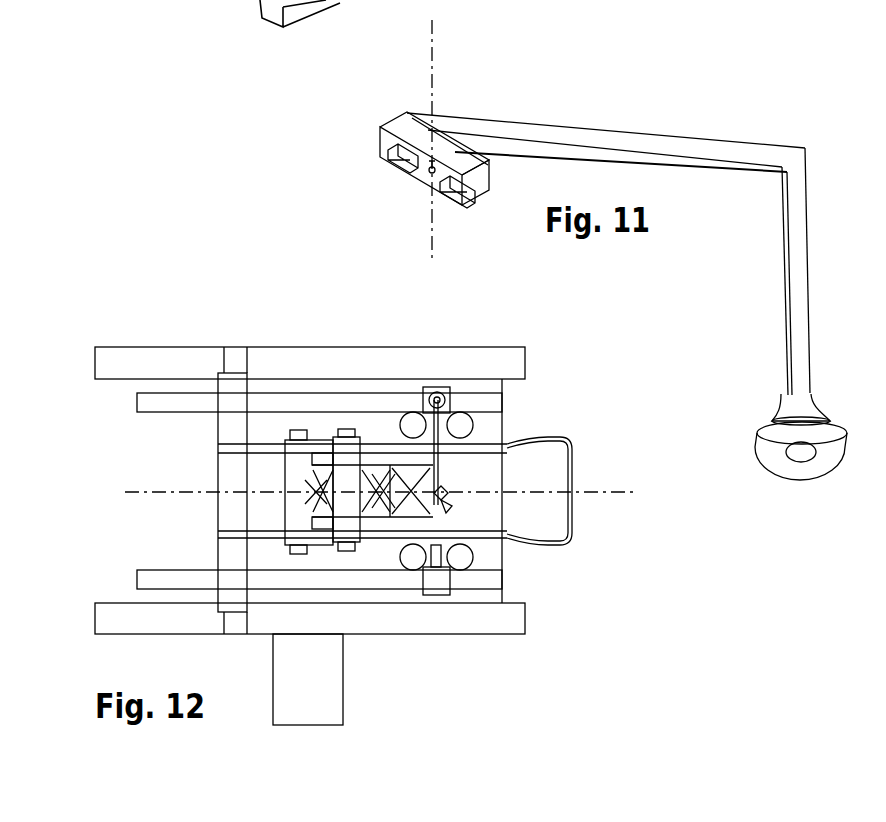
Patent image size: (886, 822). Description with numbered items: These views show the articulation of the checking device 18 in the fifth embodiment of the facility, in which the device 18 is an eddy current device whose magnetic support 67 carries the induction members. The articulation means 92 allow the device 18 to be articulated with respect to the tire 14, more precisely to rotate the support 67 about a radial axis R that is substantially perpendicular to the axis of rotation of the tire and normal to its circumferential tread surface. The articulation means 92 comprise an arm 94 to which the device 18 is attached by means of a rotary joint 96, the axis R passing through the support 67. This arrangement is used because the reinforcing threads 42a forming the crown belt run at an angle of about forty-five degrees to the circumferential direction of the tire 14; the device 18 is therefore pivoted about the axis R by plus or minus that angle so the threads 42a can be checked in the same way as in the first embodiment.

In FIG. 11, the articulation means 92 is at (447, 103).
In FIG. 11, the rotary joint 96 is at (442, 129).
In FIG. 11, the arm 94 is at (793, 237).
In FIG. 12, the arm 94 is at (443, 399).
In FIG. 11, the support 67 is at (393, 137).
In FIG. 12, the support 67 is at (447, 502).
In FIG. 12, the tire 14 is at (543, 473).
In FIG. 12, the checking device 18 is at (472, 507).
In FIG. 12, the reinforcing threads 42a is at (420, 498).
In FIG. 11, the radial axis R is at (432, 244).
In FIG. 12, the radial axis R is at (447, 491).